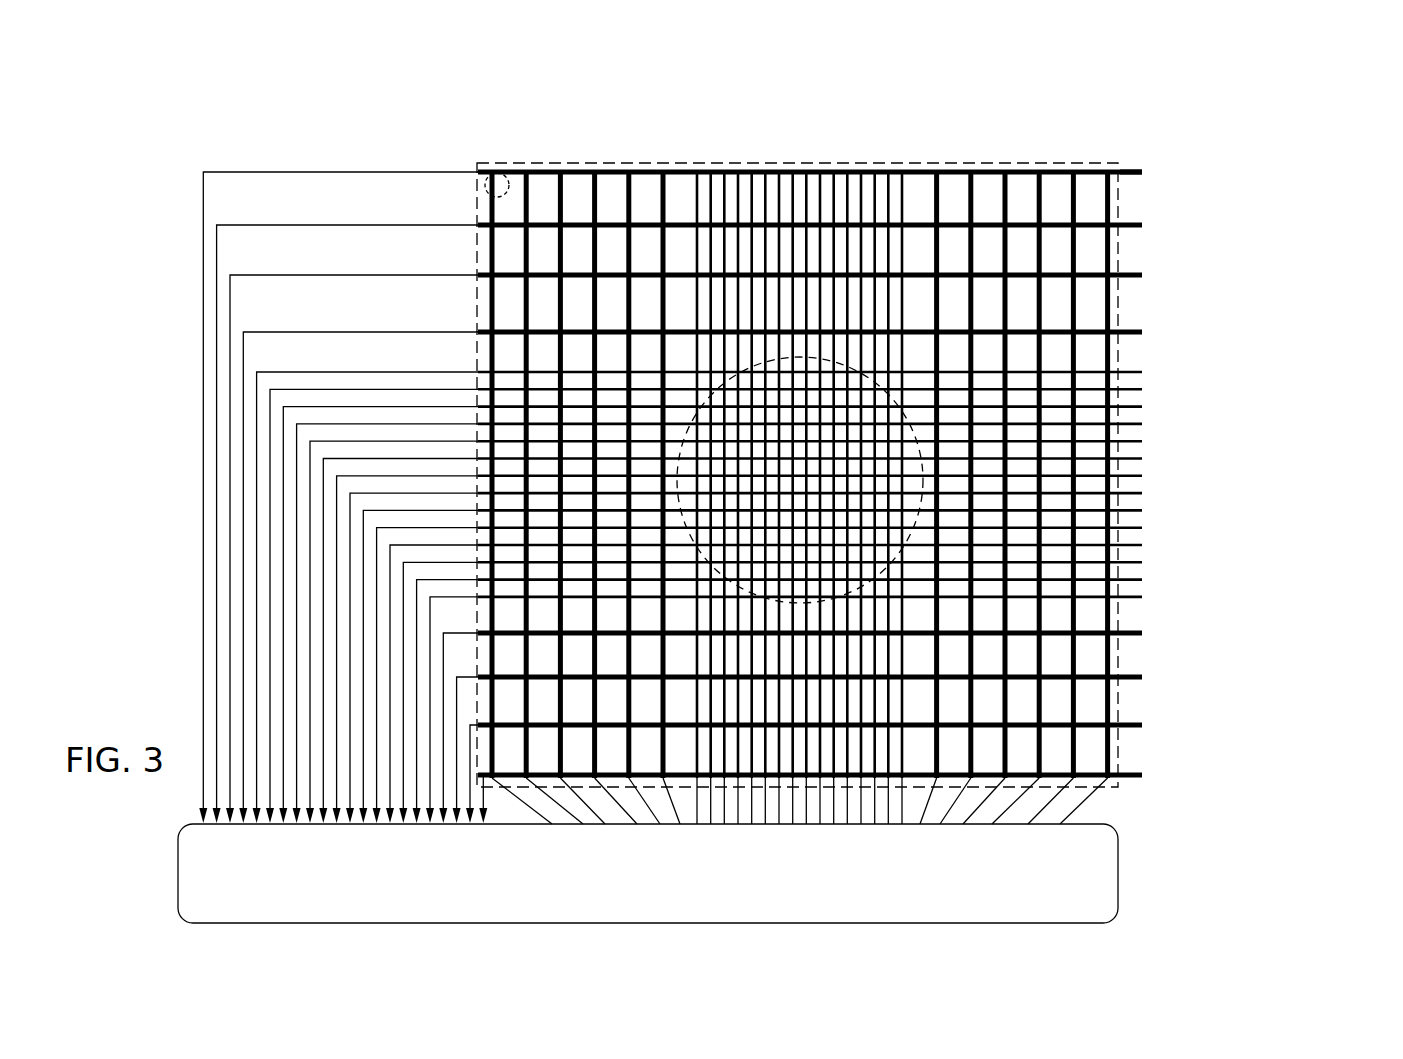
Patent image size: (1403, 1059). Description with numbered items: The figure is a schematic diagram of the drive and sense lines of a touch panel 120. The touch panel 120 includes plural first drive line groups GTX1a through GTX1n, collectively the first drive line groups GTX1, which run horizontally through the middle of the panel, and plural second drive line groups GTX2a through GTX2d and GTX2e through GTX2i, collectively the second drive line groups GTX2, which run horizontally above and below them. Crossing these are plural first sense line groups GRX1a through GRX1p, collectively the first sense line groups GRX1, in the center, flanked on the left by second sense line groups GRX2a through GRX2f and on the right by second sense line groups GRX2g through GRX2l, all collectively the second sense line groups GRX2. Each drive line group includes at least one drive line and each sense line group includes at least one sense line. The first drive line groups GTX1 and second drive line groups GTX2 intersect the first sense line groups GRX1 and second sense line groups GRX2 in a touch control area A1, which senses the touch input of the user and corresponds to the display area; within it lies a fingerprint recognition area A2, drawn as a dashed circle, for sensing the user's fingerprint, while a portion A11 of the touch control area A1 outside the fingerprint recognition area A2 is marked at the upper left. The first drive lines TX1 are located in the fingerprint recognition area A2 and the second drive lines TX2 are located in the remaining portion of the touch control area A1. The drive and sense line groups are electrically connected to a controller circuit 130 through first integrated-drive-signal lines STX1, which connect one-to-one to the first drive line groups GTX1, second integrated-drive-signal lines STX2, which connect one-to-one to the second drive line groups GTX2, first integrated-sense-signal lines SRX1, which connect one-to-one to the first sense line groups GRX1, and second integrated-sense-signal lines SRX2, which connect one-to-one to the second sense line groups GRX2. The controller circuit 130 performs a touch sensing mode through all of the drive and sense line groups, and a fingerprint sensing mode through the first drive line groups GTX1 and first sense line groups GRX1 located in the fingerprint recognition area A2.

The touch panel 120 is at (140, 104).
The controller circuit 130 is at (1100, 876).
The touch control area A1 is at (1133, 172).
The portion of the touch control area A11 is at (483, 197).
The fingerprint recognition area A2 is at (682, 418).
The first integrated-drive-signal lines STX1 is at (285, 372).
The second integrated-drive-signal lines STX2 is at (231, 171).
The first drive lines TX1 is at (431, 828).
The second drive lines TX2 is at (246, 828).
The first integrated-sense-signal lines SRX1 is at (697, 828).
The second integrated-sense-signal lines SRX2 is at (553, 828).
The first drive line groups GTX1 is at (919, 488).
The second drive line groups GTX2 is at (919, 473).
The first drive line group GTX1a is at (1142, 372).
The first drive line group GTX1n is at (862, 604).
The second drive line group GTX2a is at (1142, 174).
The second drive line group GTX2d is at (1142, 332).
The second drive line group GTX2e is at (1142, 633).
The second drive line group GTX2i is at (1142, 775).
The first sense line groups GRX1 is at (780, 392).
The second sense line groups GRX2 is at (789, 420).
The first sense line group GRX1a is at (690, 185).
The first sense line group GRX1p is at (857, 421).
The second sense line group GRX2a is at (507, 150).
The second sense line group GRX2f is at (660, 188).
The second sense line group GRX2g is at (935, 185).
The second sense line group GRX2l is at (1077, 452).